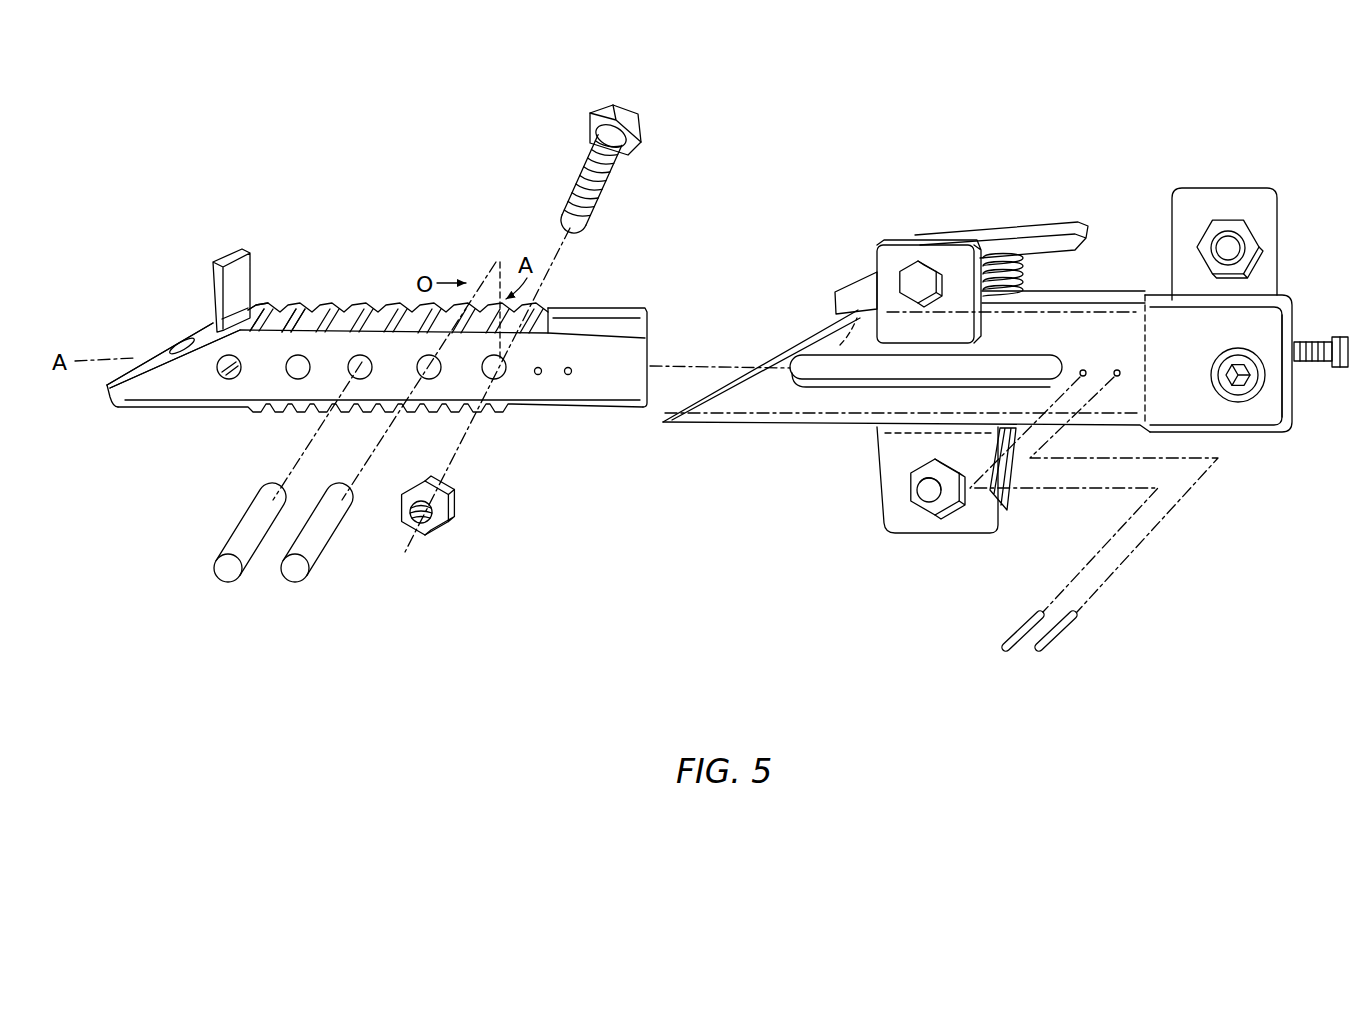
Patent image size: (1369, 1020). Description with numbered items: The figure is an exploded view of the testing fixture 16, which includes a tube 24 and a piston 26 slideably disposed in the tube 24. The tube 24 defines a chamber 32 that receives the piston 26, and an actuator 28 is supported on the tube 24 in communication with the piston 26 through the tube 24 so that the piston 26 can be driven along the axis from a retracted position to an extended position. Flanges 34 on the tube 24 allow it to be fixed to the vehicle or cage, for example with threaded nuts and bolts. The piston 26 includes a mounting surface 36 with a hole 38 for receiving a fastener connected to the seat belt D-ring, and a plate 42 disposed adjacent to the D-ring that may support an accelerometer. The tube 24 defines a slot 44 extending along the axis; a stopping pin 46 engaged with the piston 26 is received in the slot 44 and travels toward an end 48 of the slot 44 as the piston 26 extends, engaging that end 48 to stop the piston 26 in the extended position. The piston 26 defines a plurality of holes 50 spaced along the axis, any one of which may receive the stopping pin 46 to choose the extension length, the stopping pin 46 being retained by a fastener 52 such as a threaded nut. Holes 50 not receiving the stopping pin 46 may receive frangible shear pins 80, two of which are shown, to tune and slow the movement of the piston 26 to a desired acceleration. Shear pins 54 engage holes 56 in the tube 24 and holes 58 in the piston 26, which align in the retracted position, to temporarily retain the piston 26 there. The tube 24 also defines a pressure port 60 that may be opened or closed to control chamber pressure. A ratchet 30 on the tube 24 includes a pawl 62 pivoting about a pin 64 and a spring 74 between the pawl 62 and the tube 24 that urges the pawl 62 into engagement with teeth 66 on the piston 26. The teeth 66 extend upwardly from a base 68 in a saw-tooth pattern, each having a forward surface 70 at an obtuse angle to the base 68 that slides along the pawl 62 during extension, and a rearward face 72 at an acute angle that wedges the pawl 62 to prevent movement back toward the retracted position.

The testing fixture 16 is at (492, 600).
The tube 24 is at (1294, 305).
The piston 26 is at (152, 388).
The actuator 28 is at (1240, 400).
The ratchet 30 is at (1044, 212).
The chamber 32 is at (1296, 390).
The flanges 34 is at (1255, 202).
The mounting surface 36 is at (150, 352).
The hole 38 is at (182, 340).
The plate 42 is at (212, 270).
The slot 44 is at (1015, 352).
The stopping pin 46 is at (575, 188).
The end of the slot 48 is at (787, 372).
The holes 50 is at (229, 380).
The fastener 52 is at (450, 500).
The shear pins 54 is at (1037, 657).
The holes 56 is at (1117, 370).
The holes 58 is at (567, 375).
The pressure port 60 is at (1298, 345).
The pawl 62 is at (857, 288).
The pin 64 is at (917, 278).
The teeth 66 is at (370, 300).
The base 68 is at (268, 347).
The forward surface 70 is at (244, 313).
The rearward face 72 is at (245, 364).
The spring 74 is at (1027, 270).
The shear pins 80 is at (220, 565).